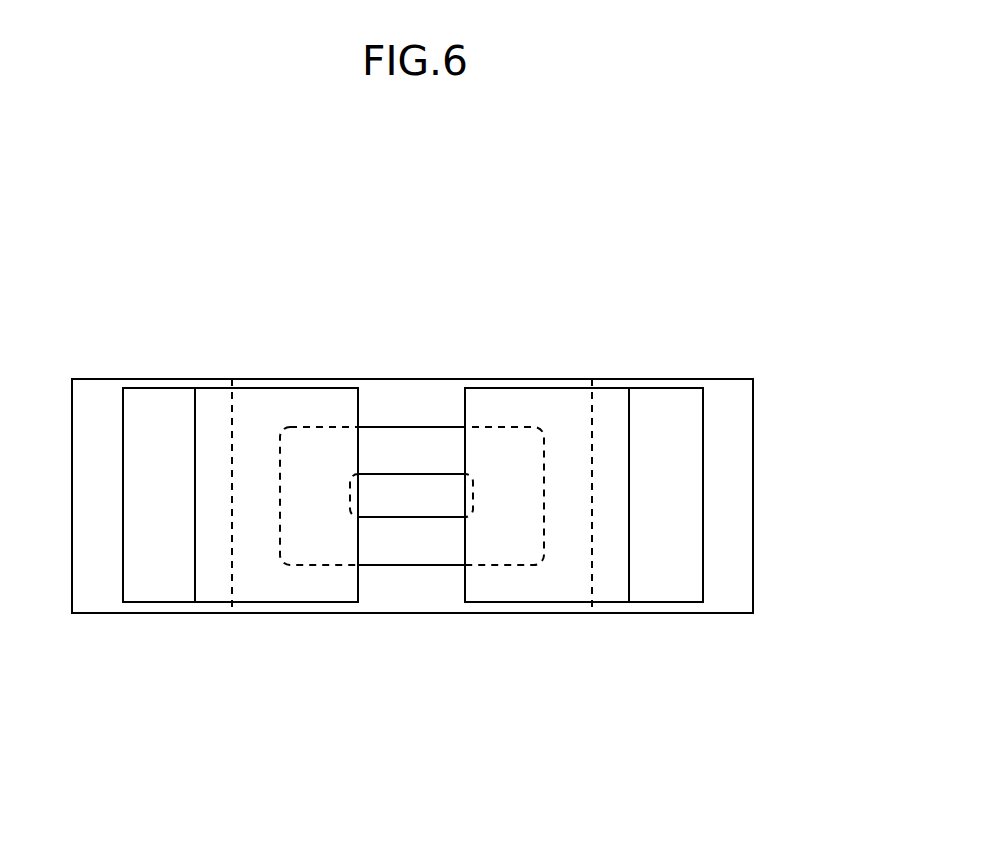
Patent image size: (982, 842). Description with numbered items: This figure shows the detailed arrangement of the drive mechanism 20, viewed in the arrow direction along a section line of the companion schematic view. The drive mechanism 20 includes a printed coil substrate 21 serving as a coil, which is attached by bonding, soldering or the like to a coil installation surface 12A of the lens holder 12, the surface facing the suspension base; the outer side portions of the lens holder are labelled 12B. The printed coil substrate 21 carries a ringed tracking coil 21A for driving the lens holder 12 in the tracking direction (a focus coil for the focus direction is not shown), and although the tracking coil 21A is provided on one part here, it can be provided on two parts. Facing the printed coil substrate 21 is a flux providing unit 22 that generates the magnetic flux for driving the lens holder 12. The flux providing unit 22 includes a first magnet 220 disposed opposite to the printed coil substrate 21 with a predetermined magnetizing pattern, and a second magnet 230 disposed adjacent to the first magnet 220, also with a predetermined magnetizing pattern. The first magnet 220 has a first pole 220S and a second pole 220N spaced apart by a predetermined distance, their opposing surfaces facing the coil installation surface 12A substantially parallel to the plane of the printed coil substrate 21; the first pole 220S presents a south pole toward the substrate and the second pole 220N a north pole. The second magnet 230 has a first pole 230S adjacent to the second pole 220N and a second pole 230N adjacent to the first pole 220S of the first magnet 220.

The drive mechanism 20 is at (461, 472).
The lens holder 12 is at (446, 463).
The coil installation surface 12A is at (385, 398).
The side portion of substrate 12B is at (99, 393).
The printed coil substrate 21 is at (412, 420).
The tracking coil 21A is at (426, 441).
The flux providing unit 22 is at (413, 540).
The first magnet 220 is at (413, 535).
The second pole 220N is at (300, 590).
The first pole 220S is at (558, 590).
The second magnet 230 is at (482, 538).
The first pole 230S is at (163, 590).
The second pole 230N is at (672, 590).